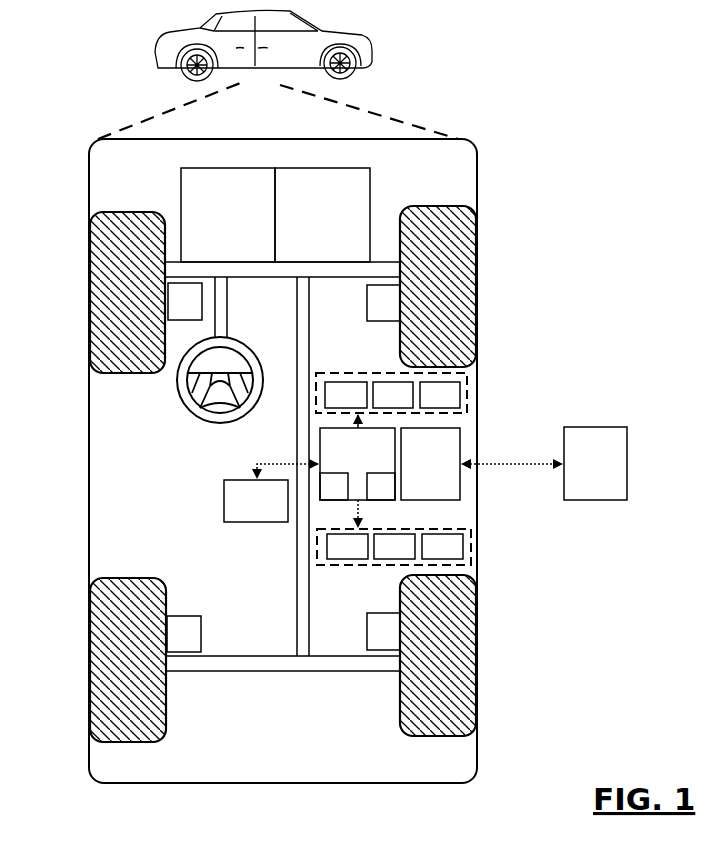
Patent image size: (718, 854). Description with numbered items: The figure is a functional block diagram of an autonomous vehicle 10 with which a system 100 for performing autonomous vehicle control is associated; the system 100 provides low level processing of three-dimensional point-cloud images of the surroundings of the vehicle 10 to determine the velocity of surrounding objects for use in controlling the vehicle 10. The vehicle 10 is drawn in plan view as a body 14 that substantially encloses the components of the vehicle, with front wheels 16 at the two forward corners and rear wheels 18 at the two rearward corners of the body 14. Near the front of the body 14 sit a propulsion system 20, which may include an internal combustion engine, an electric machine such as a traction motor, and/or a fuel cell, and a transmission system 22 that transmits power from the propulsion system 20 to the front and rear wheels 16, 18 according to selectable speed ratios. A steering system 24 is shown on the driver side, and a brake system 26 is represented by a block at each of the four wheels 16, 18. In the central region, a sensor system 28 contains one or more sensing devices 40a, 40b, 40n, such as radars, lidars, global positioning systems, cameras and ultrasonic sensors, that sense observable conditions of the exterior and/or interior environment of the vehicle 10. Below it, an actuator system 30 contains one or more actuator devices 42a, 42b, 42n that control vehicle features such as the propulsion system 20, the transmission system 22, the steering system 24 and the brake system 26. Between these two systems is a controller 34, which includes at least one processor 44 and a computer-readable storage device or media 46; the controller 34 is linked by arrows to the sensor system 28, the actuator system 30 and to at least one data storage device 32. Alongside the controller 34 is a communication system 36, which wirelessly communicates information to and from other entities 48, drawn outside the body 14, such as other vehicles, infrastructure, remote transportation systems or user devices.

The vehicle 10 is at (155, 60).
The system for performing an autonomous vehicle control 100 is at (502, 150).
The body 14 is at (88, 447).
The front wheels 16 is at (128, 212).
The rear wheels 18 is at (141, 742).
The propulsion system 20 is at (228, 215).
The transmission system 22 is at (322, 215).
The steering system 24 is at (247, 301).
The brake system 26 is at (283, 467).
The sensor system 28 is at (391, 374).
The actuator system 30 is at (394, 566).
The data storage device 32 is at (256, 501).
The controller 34 is at (357, 464).
The communication system 36 is at (430, 464).
The sensing device 40a is at (346, 395).
The sensing device 40b is at (393, 395).
The sensing device 40n is at (440, 395).
The actuator device 42a is at (347, 546).
The actuator device 42b is at (394, 546).
The actuator device 42n is at (442, 546).
The processor 44 is at (334, 486).
The computer-readable storage device or media 46 is at (381, 486).
The other entities 48 is at (595, 463).